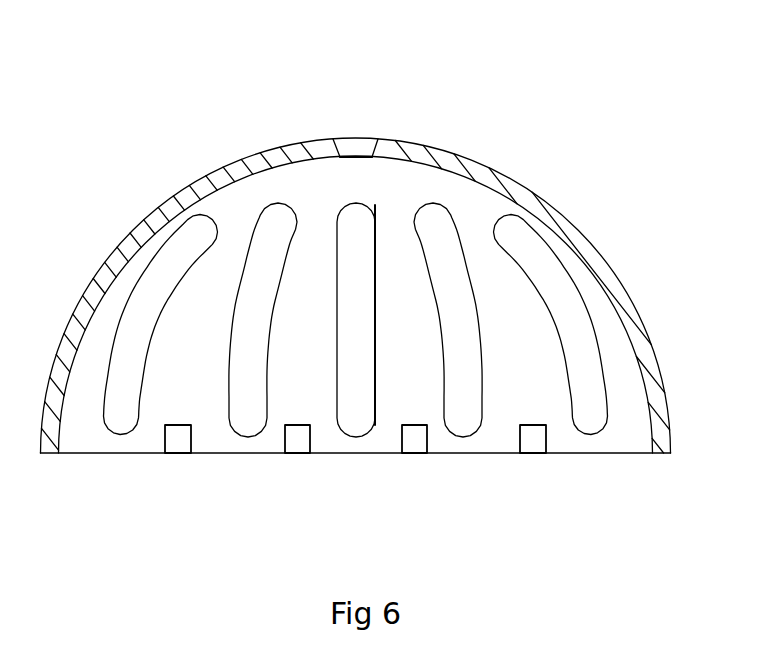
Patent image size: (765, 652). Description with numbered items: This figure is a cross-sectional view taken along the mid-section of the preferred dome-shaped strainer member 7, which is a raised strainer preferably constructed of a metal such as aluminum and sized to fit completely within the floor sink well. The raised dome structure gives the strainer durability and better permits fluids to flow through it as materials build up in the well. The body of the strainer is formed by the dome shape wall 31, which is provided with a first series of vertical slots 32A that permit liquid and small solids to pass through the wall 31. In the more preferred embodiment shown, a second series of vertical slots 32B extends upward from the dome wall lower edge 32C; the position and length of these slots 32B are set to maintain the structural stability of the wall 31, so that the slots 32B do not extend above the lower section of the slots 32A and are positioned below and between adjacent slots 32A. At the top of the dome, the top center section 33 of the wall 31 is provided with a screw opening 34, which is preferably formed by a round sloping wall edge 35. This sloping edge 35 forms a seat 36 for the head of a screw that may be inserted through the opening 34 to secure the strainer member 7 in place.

The strainer member 7 is at (358, 284).
The dome shape wall 31 is at (359, 245).
The first series of vertical slots 32A is at (143, 322).
The second series of vertical slots 32B is at (176, 443).
The dome wall lower edge 32C is at (85, 455).
The top center section 33 is at (298, 137).
The screw opening 34 is at (394, 95).
The round sloping wall edge 35 is at (368, 140).
The seat 36 is at (360, 140).